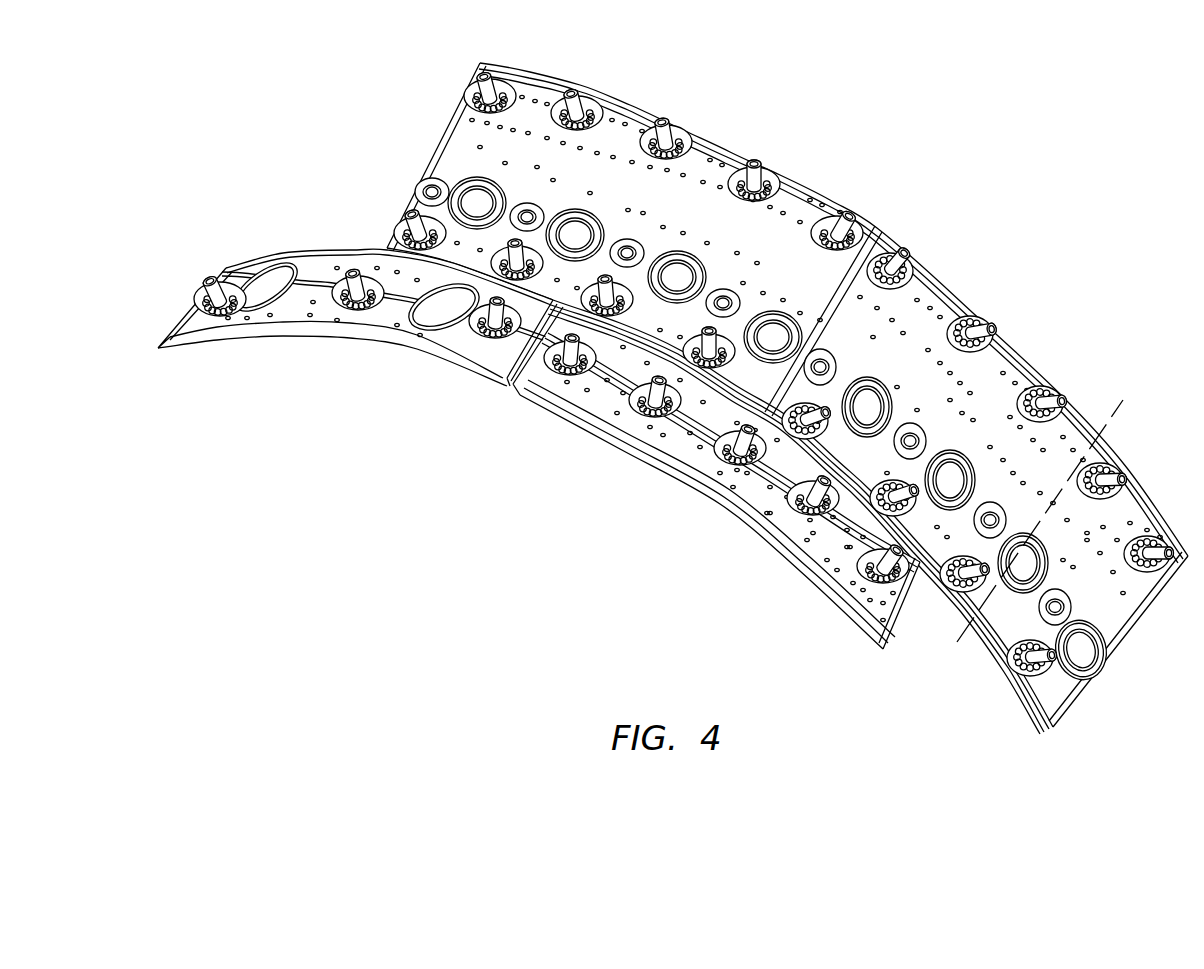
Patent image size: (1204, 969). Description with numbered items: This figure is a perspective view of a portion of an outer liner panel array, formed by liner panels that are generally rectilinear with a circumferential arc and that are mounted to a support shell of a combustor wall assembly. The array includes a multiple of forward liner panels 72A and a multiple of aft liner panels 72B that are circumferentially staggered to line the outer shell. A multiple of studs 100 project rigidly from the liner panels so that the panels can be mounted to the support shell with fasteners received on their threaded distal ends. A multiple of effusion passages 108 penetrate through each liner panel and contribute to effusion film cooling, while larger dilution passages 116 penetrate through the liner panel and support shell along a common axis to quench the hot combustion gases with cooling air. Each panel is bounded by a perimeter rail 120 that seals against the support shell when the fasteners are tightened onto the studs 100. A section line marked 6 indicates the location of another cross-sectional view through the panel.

The stud 100 is at (758, 165).
The effusion passage 108 is at (995, 358).
The dilution passage 116 is at (951, 480).
The perimeter rail 120 is at (850, 634).
The forward liner panel 72A is at (716, 523).
The aft liner panel 72B is at (1129, 652).
The section line 6- 6 is at (1123, 400).